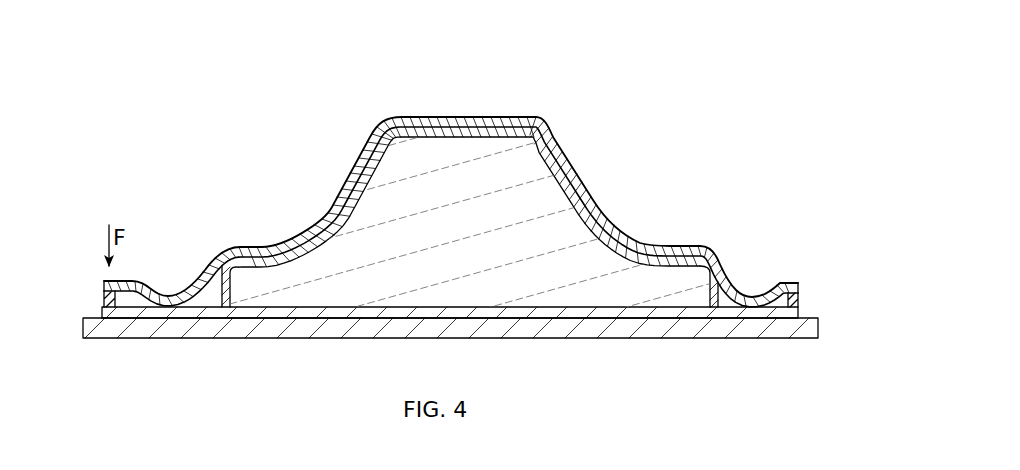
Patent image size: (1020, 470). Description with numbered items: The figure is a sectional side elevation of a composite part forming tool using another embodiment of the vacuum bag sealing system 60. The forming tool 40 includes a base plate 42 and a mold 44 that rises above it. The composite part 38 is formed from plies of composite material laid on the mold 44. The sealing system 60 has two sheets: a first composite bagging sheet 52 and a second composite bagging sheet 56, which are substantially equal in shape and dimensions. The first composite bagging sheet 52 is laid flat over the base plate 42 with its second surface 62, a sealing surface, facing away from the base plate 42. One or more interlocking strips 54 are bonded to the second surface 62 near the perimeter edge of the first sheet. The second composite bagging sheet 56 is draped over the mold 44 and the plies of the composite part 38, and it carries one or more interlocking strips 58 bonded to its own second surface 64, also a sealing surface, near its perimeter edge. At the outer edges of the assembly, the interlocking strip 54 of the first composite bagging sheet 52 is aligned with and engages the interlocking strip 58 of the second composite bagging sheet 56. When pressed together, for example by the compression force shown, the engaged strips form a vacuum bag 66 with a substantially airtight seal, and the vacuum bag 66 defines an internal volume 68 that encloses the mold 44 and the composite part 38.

The composite part 38 is at (487, 133).
The forming tool 40 is at (64, 333).
The base plate 42 is at (131, 338).
The mold 44 is at (484, 234).
The first composite bagging sheet 52 is at (776, 313).
The interlocking strip 54 is at (103, 304).
The second composite bagging sheet 56 is at (790, 283).
The interlocking strip 58 is at (103, 285).
The vacuum bag sealing system 60 is at (702, 80).
The second surface 62 is at (443, 307).
The second surface 64 is at (267, 250).
The vacuum bag 66 is at (581, 102).
The internal volume 68 is at (580, 216).